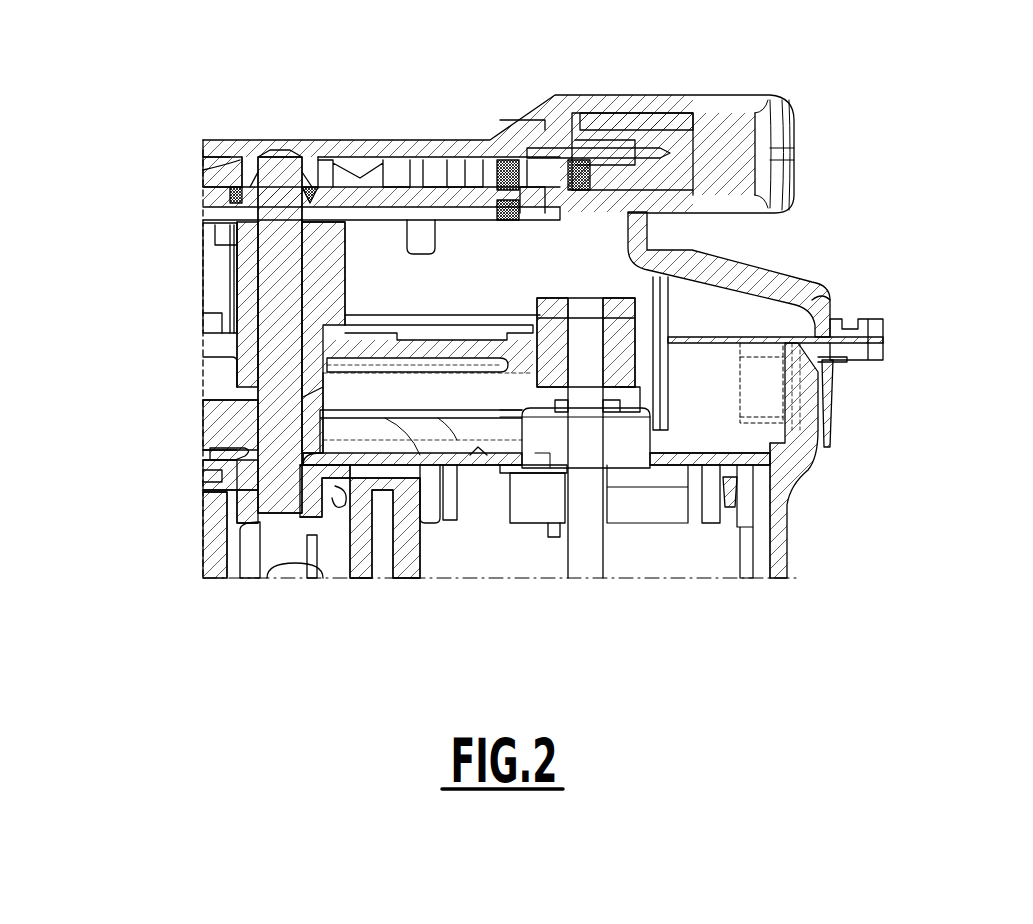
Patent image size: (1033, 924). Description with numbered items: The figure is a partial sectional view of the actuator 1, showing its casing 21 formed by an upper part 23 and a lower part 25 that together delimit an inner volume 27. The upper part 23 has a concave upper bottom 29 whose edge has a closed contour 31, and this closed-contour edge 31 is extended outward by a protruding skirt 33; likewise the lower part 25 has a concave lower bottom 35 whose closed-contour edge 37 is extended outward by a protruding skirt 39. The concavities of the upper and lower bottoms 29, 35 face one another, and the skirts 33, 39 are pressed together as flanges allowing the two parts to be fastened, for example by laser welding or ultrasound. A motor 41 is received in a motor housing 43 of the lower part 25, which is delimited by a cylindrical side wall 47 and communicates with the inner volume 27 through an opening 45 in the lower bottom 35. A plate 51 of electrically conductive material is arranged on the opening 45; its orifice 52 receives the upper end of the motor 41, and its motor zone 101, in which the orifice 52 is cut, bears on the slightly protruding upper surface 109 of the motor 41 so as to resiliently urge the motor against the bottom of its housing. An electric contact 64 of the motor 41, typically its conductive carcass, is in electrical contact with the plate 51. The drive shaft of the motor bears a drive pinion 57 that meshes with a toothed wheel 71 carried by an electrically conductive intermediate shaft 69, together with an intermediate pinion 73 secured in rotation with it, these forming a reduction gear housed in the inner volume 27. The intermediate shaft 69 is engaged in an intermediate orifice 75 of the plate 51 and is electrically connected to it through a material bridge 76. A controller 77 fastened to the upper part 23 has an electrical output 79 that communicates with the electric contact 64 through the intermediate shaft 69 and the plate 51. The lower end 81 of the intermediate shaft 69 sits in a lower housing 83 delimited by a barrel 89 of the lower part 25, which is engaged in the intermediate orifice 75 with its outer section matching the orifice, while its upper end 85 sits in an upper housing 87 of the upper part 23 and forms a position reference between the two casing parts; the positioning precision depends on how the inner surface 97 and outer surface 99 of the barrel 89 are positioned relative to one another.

The actuator 1 is at (118, 207).
The casing 21 is at (188, 127).
The upper part 23 is at (412, 138).
The lower part 25 is at (806, 506).
The inner volume 27 is at (725, 328).
The upper bottom 29 is at (370, 150).
The closed-contour edge 31 is at (818, 305).
The skirt 33 is at (885, 326).
The lower bottom 35 is at (220, 488).
The closed-contour edge 37 is at (830, 400).
The skirt 39 is at (858, 350).
The motor 41 is at (713, 555).
The motor housing 43 is at (425, 490).
The opening 45 is at (405, 475).
The side wall 47 is at (780, 555).
The plate 51 is at (425, 455).
The orifice 52 is at (652, 467).
The drive pinion 57 is at (582, 310).
The electric contact 64 is at (498, 475).
The intermediate shaft 69 is at (280, 297).
The toothed wheel 71 is at (468, 345).
The intermediate pinion 73 is at (340, 265).
The intermediate orifice 75 is at (245, 478).
The material bridge 76 is at (305, 490).
The controller 77 is at (458, 192).
The electrical output 79 is at (236, 187).
The lower end 81 is at (285, 505).
The lower housing 83 is at (278, 480).
The upper end 85 is at (292, 185).
The upper housing 87 is at (272, 185).
The barrel 89 is at (245, 400).
The inner surface 97 is at (265, 425).
The outer surface 99 is at (238, 452).
The motor zone 101 is at (512, 458).
The upper surface 109 is at (470, 462).